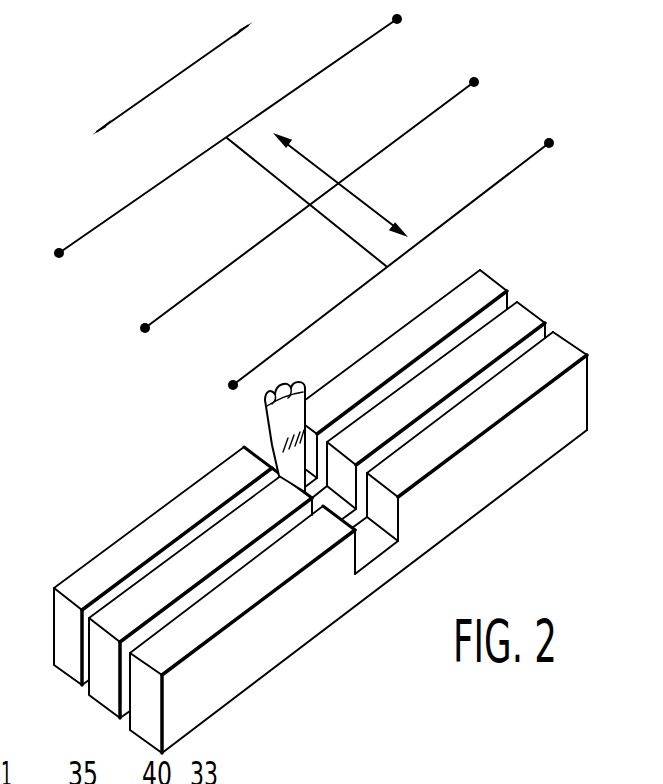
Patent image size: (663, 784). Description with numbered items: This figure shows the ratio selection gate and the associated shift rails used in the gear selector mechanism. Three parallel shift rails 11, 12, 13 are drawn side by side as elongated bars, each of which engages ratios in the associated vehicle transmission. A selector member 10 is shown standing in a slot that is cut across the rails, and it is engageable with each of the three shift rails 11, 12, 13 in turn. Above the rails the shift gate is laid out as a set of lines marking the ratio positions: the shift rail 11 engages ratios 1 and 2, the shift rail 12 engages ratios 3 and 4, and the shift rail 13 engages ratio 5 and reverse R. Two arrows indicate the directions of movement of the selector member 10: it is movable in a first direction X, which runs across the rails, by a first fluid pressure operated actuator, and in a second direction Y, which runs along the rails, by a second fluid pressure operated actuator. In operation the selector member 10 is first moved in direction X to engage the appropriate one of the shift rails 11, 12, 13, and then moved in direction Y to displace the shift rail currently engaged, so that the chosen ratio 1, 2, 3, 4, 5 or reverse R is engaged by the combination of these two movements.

The ratio 1 is at (242, 133).
The ratio 2 is at (56, 274).
The ratio 3 is at (323, 197).
The ratio 4 is at (141, 348).
The ratio 5 is at (402, 257).
The reverse R is at (227, 402).
The first direction X is at (328, 175).
The second direction Y is at (170, 77).
The selector member 10 is at (263, 432).
The shift rail 11 is at (128, 548).
The shift rail 12 is at (125, 603).
The shift rail 13 is at (283, 573).